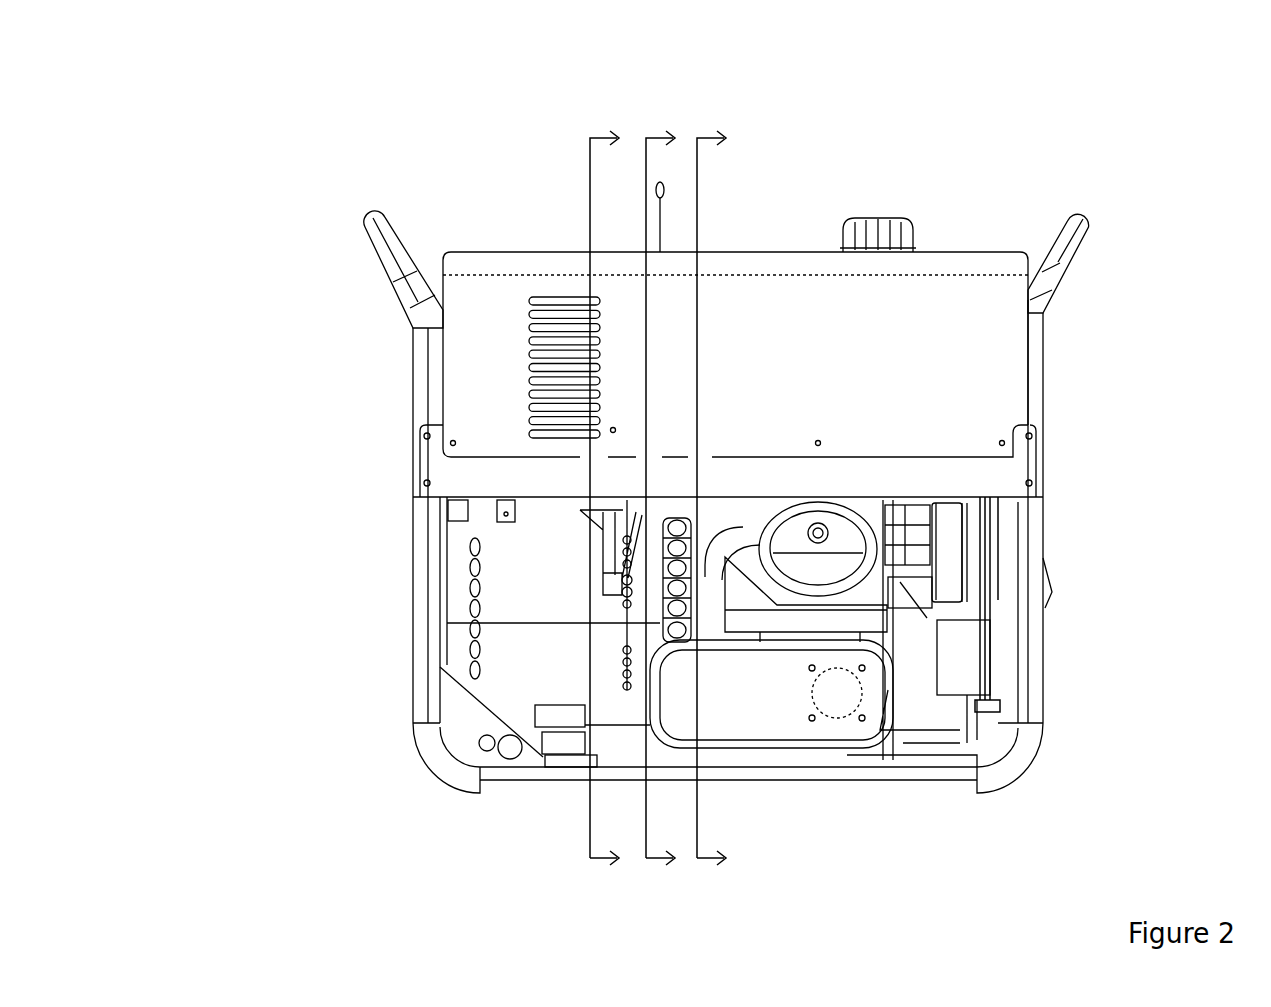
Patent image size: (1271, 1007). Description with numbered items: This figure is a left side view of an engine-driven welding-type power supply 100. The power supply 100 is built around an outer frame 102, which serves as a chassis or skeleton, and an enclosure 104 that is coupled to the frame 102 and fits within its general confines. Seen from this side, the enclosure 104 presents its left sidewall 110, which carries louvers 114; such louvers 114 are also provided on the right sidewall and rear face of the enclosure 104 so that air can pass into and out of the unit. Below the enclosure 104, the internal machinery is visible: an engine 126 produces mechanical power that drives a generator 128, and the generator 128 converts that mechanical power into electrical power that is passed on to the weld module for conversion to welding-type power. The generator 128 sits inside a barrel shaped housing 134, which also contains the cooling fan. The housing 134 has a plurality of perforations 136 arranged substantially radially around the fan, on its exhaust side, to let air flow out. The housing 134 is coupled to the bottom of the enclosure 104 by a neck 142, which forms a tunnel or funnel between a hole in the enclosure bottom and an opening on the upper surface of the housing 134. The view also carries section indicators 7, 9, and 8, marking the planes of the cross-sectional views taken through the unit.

The engine-driven welding-type power supply 100 is at (1157, 45).
The outer frame 102 is at (1035, 520).
The enclosure 104 is at (763, 300).
The left sidewall 110 is at (1003, 395).
The louvers 114 is at (549, 271).
The engine 126 is at (928, 588).
The generator 128 is at (492, 590).
The housing 134 is at (523, 667).
The perforations 136 is at (651, 622).
The neck 142 is at (615, 543).
The section line 7- 7 is at (602, 498).
The section line 8- 8 is at (708, 498).
The section line 9- 9 is at (658, 498).